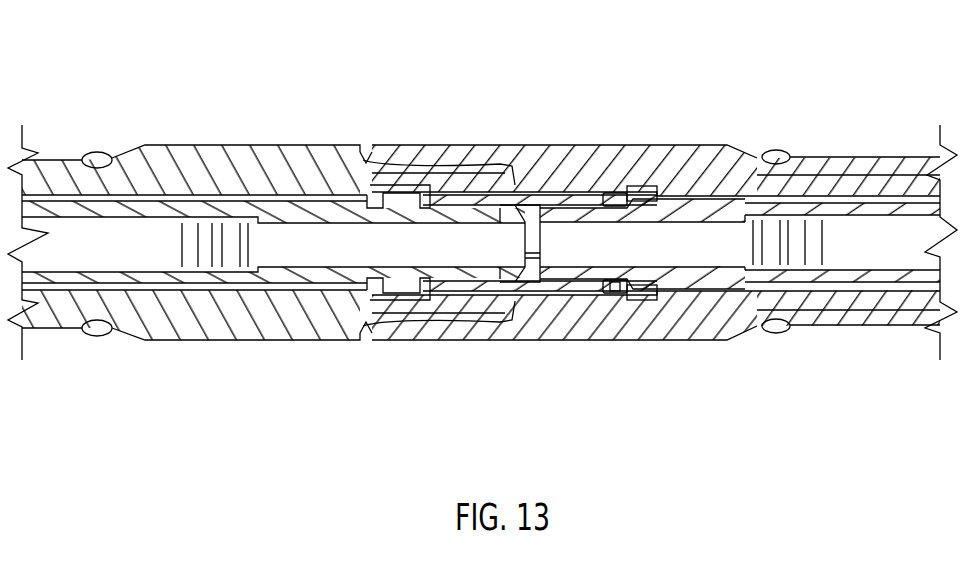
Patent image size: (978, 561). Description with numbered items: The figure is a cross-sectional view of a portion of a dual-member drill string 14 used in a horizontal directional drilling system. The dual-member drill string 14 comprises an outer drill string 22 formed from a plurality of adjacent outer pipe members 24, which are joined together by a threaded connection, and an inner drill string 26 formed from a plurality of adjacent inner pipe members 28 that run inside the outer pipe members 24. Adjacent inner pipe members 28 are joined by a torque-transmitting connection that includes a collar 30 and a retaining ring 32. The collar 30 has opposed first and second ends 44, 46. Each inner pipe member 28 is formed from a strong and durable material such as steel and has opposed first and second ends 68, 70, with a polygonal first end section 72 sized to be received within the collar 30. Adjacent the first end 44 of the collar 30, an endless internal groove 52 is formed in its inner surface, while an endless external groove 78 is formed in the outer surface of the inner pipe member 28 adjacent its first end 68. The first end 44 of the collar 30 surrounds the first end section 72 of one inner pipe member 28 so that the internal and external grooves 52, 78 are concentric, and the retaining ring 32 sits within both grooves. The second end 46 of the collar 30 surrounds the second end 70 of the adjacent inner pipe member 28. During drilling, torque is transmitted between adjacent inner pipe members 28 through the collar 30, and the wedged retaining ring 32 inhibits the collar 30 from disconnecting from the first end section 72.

The dual-member drill string 14 is at (183, 65).
The outer drill string 22 is at (215, 342).
The outer pipe member 24 is at (285, 340).
The inner drill string 26 is at (205, 198).
The inner pipe member 28 is at (241, 203).
The collar 30 is at (526, 194).
The retaining ring 32 is at (619, 283).
The first end 44 is at (630, 288).
The second end 46 is at (423, 190).
The endless internal groove 52 is at (606, 198).
The first end 68 is at (543, 273).
The second end 70 is at (507, 272).
The first end section 72 is at (568, 205).
The endless external groove 78 is at (620, 281).